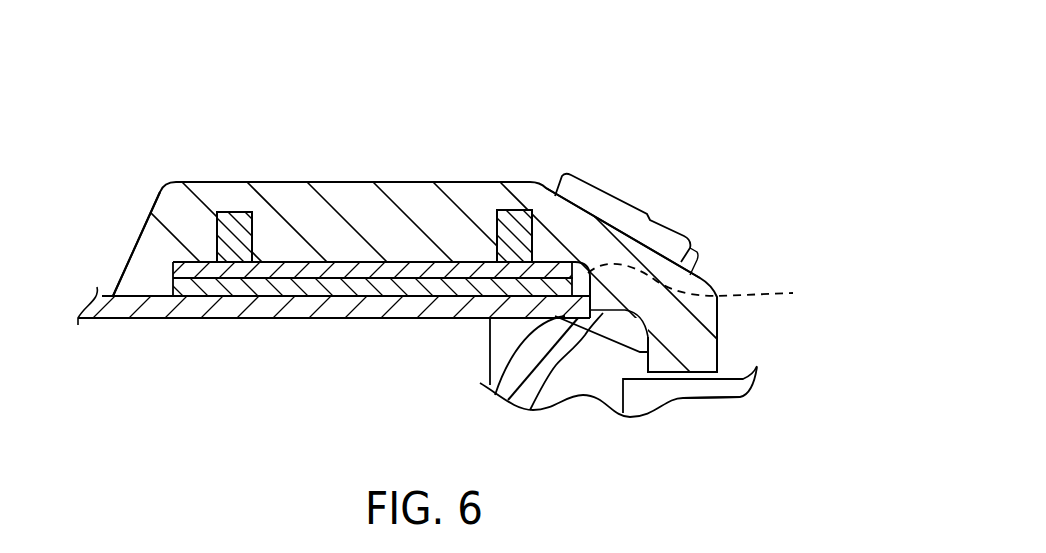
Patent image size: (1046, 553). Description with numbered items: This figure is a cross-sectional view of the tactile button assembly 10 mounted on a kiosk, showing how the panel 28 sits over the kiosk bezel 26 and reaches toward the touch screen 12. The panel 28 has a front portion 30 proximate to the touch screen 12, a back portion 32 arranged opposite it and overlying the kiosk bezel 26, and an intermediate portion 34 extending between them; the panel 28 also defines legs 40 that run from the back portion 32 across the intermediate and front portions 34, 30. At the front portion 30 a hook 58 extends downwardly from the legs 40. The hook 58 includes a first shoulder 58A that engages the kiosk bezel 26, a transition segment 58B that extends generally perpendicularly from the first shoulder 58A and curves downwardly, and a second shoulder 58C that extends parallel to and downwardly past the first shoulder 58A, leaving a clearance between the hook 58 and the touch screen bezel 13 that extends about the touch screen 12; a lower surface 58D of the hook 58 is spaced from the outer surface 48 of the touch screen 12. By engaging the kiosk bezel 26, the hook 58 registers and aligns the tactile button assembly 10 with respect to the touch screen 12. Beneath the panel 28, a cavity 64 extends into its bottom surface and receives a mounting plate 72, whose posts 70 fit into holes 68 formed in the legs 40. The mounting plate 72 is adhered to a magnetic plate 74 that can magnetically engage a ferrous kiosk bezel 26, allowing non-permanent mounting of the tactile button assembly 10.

The tactile button assembly 10 is at (556, 56).
The touch screen 12 is at (693, 387).
The touch screen bezel 13 is at (503, 358).
The kiosk bezel 26 is at (120, 312).
The panel 28 is at (397, 170).
The front portion 30 is at (726, 274).
The back portion 32 is at (137, 240).
The intermediate portion 34 is at (345, 172).
The legs 40 is at (284, 182).
The tactile indicia 48 is at (668, 224).
The hook 58 is at (728, 336).
The first shoulder 58A is at (510, 378).
The transition segment 58B is at (540, 380).
The second shoulder 58C is at (598, 382).
The lower surface 58D is at (655, 385).
The cavity 64 is at (706, 287).
The holes 68 is at (217, 207).
The posts 70 is at (500, 228).
The mounting plate 72 is at (347, 268).
The magnetic plate 74 is at (302, 290).